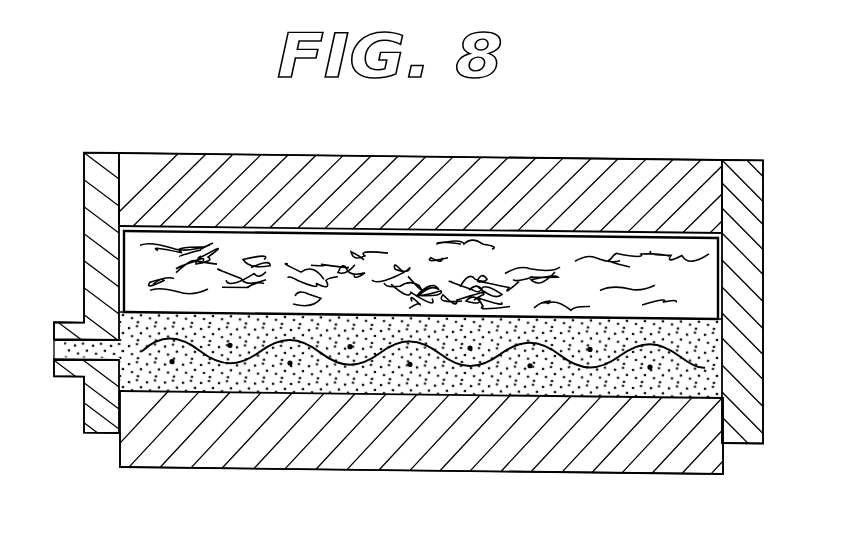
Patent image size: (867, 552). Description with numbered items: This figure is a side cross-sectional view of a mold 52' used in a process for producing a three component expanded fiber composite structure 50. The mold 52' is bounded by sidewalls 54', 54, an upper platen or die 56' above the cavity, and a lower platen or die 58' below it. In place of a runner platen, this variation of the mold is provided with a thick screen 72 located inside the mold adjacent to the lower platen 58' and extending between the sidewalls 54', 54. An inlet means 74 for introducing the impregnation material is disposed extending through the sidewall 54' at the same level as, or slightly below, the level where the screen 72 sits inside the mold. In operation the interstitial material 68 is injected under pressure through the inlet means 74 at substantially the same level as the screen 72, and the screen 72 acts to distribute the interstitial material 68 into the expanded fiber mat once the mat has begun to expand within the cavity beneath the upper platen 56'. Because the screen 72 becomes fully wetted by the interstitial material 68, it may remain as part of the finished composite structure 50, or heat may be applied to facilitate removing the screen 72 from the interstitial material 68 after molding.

The mold 52' is at (397, 285).
The sidewall 54' is at (72, 288).
The sidewall 54 is at (773, 296).
The upper platen or die 56' is at (444, 164).
The lower platen or die 58' is at (439, 459).
The three component expanded fiber composite structure 50 is at (700, 271).
The interstitial material 68 is at (521, 378).
The screen 72 is at (328, 376).
The inlet means 74 is at (48, 348).